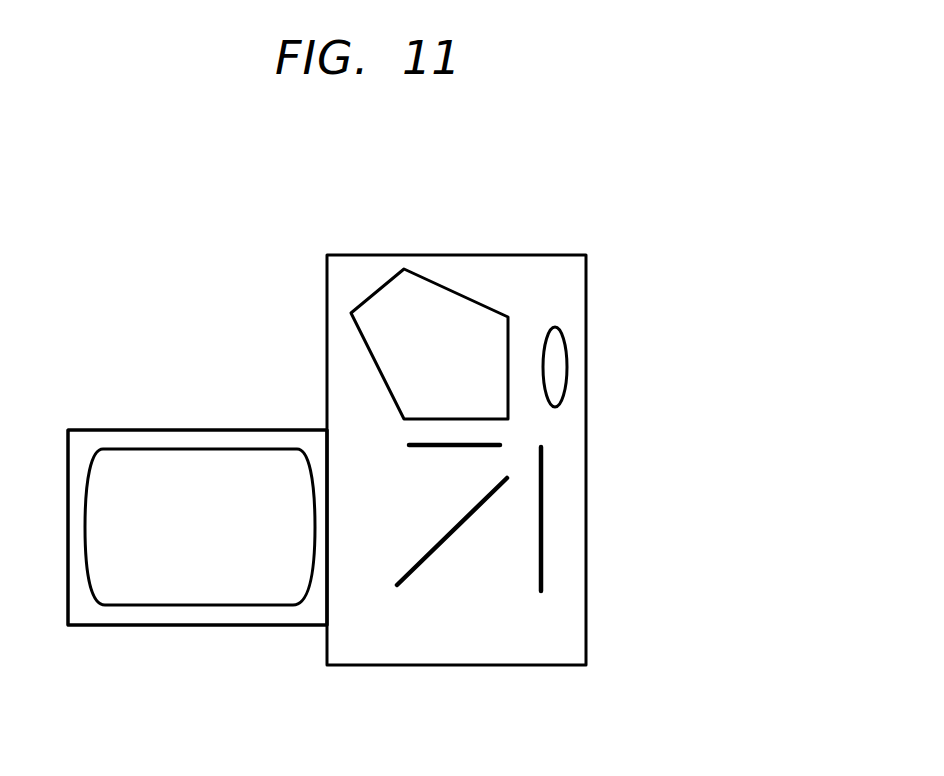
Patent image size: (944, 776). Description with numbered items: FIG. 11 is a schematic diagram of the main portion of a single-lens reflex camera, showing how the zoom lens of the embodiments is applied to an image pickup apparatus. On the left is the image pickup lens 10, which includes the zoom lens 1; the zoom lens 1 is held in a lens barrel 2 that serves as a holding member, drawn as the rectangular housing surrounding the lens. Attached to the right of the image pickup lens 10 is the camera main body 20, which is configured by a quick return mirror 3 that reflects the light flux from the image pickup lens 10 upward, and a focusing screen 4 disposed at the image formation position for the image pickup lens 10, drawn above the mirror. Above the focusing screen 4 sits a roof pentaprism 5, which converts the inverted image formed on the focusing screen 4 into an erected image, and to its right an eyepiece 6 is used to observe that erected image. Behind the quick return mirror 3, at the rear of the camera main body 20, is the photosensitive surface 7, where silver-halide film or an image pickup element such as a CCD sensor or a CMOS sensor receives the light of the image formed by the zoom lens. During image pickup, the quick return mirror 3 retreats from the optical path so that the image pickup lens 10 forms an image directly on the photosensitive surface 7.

The zoom lens 1 is at (172, 449).
The lens barrel 2 is at (193, 627).
The quick return mirror 3 is at (443, 543).
The focusing screen 4 is at (430, 447).
The roof pentaprism 5 is at (375, 292).
The eyepiece 6 is at (566, 344).
The photosensitive surface 7 is at (541, 500).
The image pickup lens 10 is at (232, 410).
The camera main body 20 is at (447, 233).